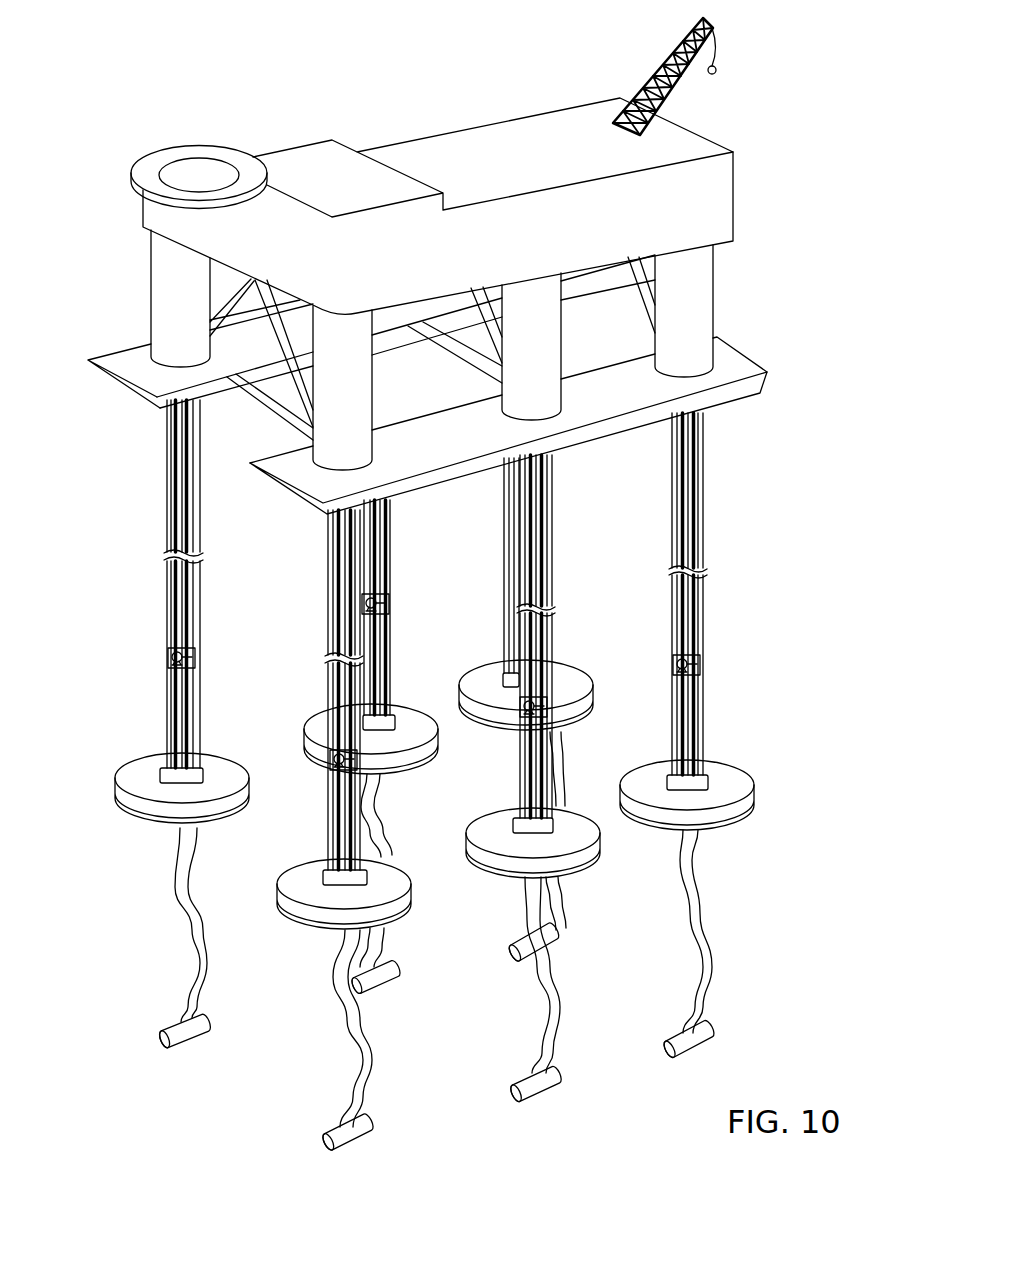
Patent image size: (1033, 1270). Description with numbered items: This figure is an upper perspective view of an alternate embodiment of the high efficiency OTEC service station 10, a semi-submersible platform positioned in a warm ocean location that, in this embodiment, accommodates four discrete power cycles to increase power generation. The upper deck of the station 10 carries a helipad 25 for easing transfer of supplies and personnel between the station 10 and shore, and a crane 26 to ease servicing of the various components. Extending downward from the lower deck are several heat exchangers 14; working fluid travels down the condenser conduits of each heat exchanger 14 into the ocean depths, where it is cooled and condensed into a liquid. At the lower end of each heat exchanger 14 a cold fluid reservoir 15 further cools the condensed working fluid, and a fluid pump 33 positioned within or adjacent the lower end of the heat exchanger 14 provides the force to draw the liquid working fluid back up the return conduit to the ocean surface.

The OTEC service station 10 is at (176, 86).
The helipad 25 is at (150, 172).
The crane 26 is at (668, 65).
The heat exchanger 14 is at (704, 540).
The fluid pump 33 is at (703, 660).
The cold fluid reservoir 15 is at (727, 787).